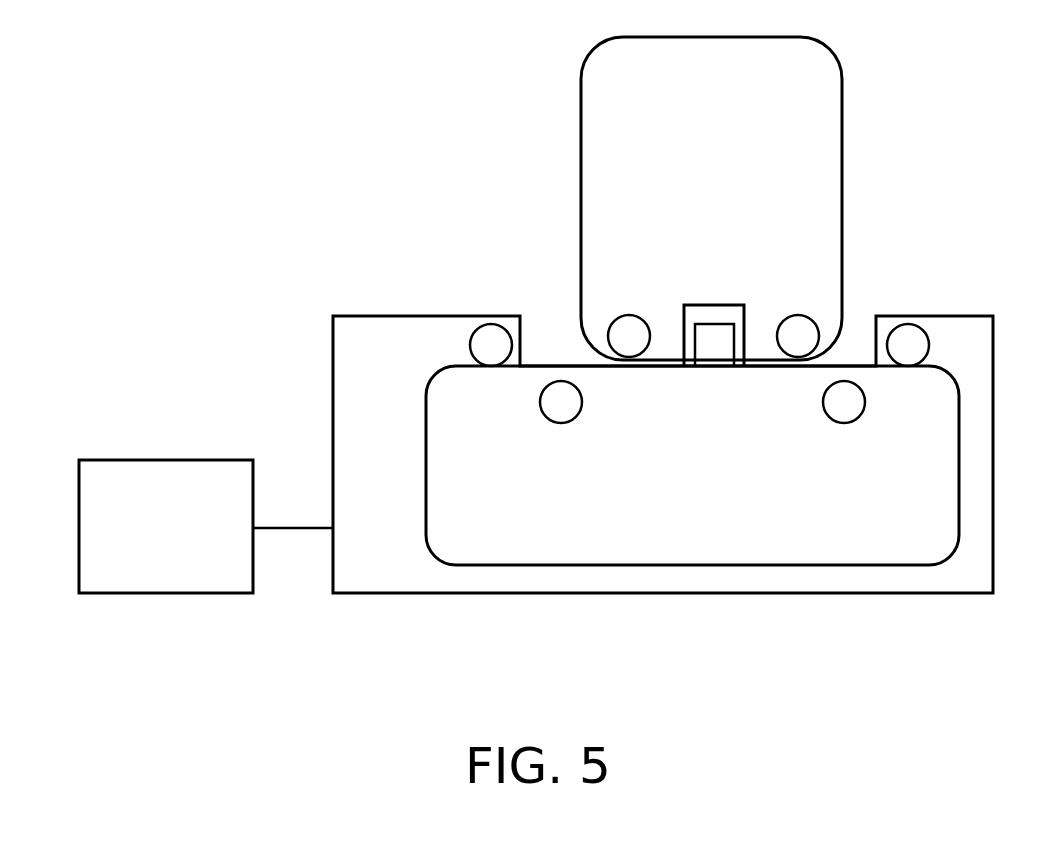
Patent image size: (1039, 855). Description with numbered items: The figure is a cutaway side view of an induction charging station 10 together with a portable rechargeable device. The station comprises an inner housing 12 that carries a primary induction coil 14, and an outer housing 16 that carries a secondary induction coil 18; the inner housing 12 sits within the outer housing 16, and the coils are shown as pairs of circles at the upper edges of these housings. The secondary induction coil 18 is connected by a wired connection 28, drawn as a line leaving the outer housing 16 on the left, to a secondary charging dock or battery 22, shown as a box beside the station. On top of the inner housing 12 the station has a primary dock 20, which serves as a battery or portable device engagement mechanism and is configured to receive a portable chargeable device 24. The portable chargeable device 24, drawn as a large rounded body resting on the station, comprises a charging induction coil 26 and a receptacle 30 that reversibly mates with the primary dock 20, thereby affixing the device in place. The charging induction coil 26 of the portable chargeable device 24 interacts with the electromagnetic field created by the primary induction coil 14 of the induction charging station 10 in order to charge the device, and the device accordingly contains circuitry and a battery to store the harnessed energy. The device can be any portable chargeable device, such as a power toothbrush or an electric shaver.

The induction charging station 10 is at (278, 268).
The inner housing 12 is at (633, 565).
The primary induction coil 14 is at (560, 381).
The outer housing 16 is at (395, 315).
The secondary induction coil 18 is at (492, 324).
The primary dock 20 is at (720, 324).
The secondary charging dock or battery 22 is at (177, 460).
The portable chargeable device 24 is at (581, 152).
The charging induction coil 26 is at (798, 315).
The wired connection 28 is at (300, 528).
The receptacle 30 is at (703, 305).